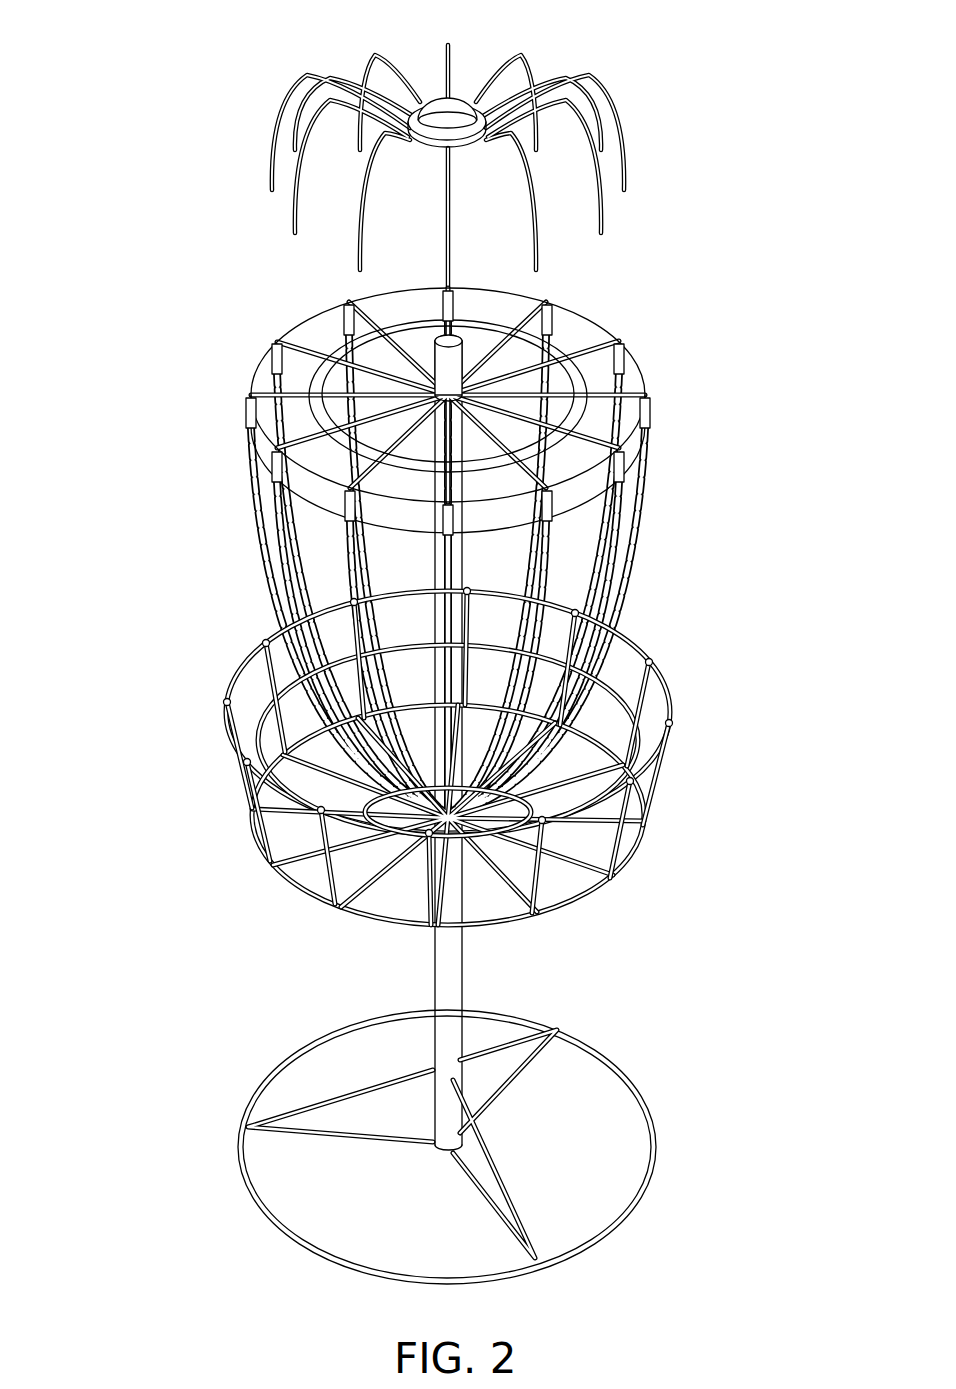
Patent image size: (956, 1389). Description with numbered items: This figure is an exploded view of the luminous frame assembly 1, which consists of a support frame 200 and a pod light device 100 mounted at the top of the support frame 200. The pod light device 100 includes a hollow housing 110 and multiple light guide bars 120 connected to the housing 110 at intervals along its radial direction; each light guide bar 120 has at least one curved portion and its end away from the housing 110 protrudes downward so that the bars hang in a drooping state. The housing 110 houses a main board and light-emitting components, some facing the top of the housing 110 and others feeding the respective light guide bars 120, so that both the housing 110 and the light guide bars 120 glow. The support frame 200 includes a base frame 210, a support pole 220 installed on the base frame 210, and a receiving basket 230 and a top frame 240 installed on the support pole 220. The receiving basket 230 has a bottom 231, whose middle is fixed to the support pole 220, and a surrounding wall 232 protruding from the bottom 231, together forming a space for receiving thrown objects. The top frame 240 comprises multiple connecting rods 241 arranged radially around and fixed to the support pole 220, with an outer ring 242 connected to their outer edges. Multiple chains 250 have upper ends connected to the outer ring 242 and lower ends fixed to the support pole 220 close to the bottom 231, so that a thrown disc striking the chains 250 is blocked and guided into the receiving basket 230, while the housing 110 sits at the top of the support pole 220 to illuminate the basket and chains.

The luminous frame assembly 1 is at (76, 31).
The pod light device 100 is at (256, 133).
The housing 110 is at (449, 108).
The light guide bars 120 is at (578, 70).
The support frame 200 is at (186, 758).
The base frame 210 is at (662, 1130).
The support pole 220 is at (455, 966).
The receiving basket 230 is at (757, 727).
The bottom 231 is at (560, 853).
The surrounding wall 232 is at (668, 752).
The top frame 240 is at (743, 402).
The connecting rods 241 is at (585, 424).
The outer ring 242 is at (588, 483).
The chains 250 is at (258, 545).